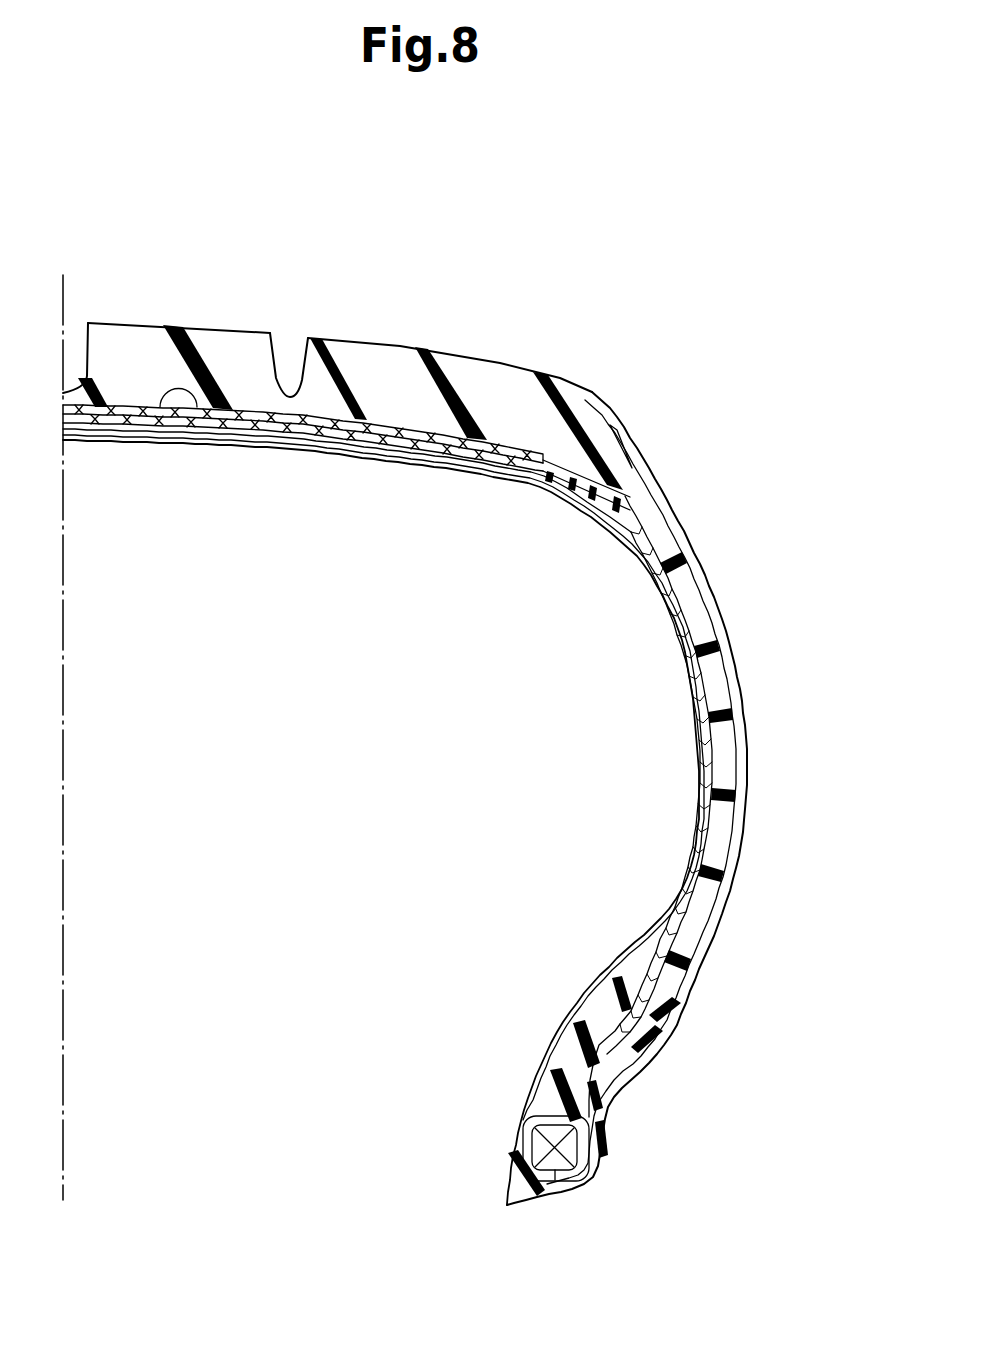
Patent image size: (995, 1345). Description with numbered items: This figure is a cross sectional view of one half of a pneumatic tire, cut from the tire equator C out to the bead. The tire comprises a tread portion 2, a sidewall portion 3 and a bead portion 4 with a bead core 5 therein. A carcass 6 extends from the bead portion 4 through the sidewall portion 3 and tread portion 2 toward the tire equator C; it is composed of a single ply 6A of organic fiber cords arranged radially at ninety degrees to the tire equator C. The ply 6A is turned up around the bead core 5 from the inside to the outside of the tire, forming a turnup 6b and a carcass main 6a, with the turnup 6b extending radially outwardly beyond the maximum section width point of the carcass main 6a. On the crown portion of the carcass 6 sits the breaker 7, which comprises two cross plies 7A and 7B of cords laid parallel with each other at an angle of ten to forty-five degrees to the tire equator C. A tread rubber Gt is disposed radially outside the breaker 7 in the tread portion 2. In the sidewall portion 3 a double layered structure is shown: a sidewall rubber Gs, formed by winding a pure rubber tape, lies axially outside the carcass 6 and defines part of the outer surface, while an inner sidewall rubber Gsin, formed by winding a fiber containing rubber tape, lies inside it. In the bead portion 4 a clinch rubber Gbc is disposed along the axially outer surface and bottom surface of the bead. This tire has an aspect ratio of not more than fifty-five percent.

The tread portion 2 is at (370, 297).
The tread rubber Gt is at (497, 380).
The sidewall portion 3 is at (782, 752).
The sidewall rubber Gs is at (710, 612).
The inner sidewall rubber Gsin is at (713, 688).
The breaker 7 is at (303, 496).
The breaker cross ply 7A is at (133, 418).
The breaker cross ply 7B is at (207, 414).
The carcass 6 is at (387, 773).
The carcass ply 6A is at (387, 773).
The carcass main 6a is at (652, 926).
The carcass ply turnup 6b is at (628, 1014).
The clinch rubber Gbc is at (648, 1030).
The bead core 5 is at (540, 1147).
The bead portion 4 is at (633, 1128).
The tire equator C is at (65, 718).